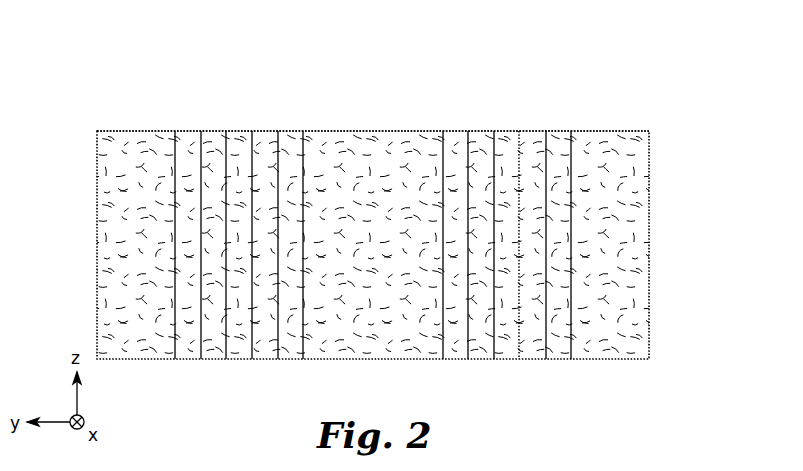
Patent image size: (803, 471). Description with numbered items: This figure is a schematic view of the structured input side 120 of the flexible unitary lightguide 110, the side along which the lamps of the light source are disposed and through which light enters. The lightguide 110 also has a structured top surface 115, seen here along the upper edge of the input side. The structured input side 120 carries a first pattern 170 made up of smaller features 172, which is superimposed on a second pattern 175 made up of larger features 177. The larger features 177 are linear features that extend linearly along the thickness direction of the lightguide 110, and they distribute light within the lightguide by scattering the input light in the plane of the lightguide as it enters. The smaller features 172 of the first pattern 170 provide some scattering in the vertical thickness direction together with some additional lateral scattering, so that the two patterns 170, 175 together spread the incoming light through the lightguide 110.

The flexible unitary lightguide 110 is at (606, 69).
The structured top surface 115 is at (612, 130).
The structured input side 120 is at (105, 178).
The first pattern 170 is at (563, 160).
The smaller features 172 is at (402, 148).
The second pattern 175 is at (207, 147).
The larger features 177 is at (505, 352).